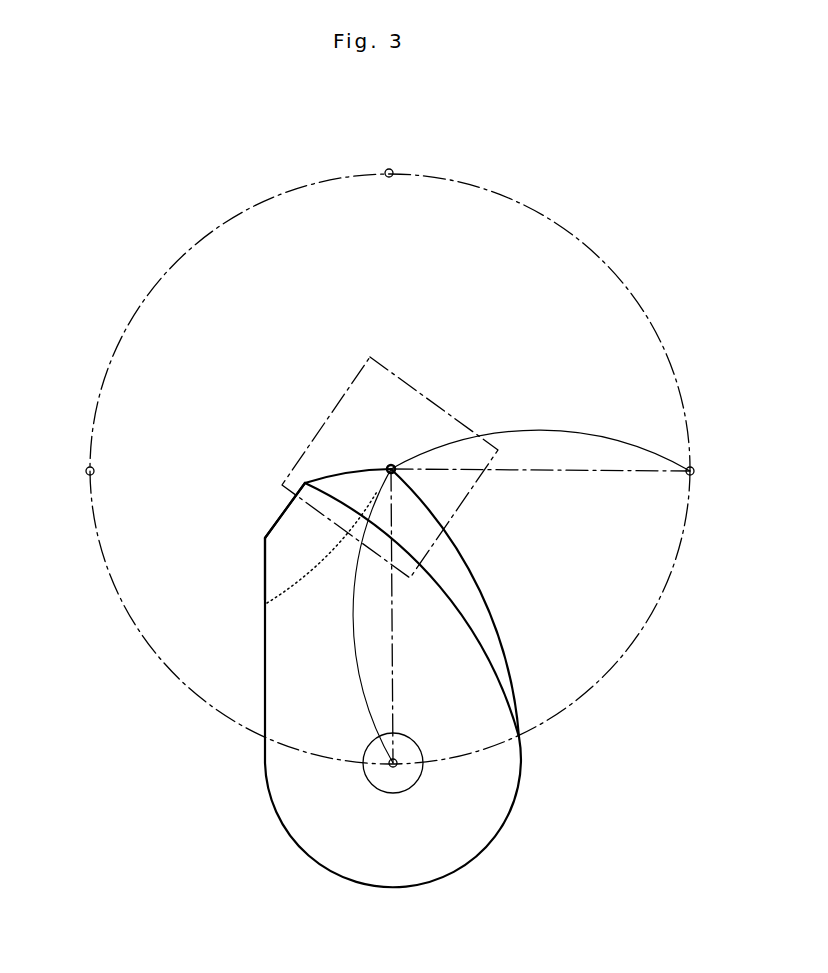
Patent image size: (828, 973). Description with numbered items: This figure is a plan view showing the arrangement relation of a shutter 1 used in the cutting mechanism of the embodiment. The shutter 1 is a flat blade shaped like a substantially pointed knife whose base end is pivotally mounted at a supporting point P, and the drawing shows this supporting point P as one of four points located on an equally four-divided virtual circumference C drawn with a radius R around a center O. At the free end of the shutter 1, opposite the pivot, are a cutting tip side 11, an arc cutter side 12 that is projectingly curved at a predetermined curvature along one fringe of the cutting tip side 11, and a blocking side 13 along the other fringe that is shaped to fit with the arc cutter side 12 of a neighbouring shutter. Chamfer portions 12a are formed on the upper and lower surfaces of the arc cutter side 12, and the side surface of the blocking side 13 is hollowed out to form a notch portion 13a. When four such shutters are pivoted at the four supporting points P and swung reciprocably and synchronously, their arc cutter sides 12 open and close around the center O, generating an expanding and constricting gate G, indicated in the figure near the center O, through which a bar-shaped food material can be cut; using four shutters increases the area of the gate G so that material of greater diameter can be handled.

The shutter 1 is at (500, 792).
The cutting tip side 11 is at (334, 472).
The arc cutter side 12 is at (492, 606).
The chamfer portion 12a is at (450, 568).
The blocking side 13 is at (262, 530).
The notch portion 13a is at (283, 513).
The virtual circumference C is at (596, 250).
The supporting point P is at (392, 170).
The center O is at (536, 603).
The expanding and constricting gate G is at (400, 425).
The radius R is at (518, 591).